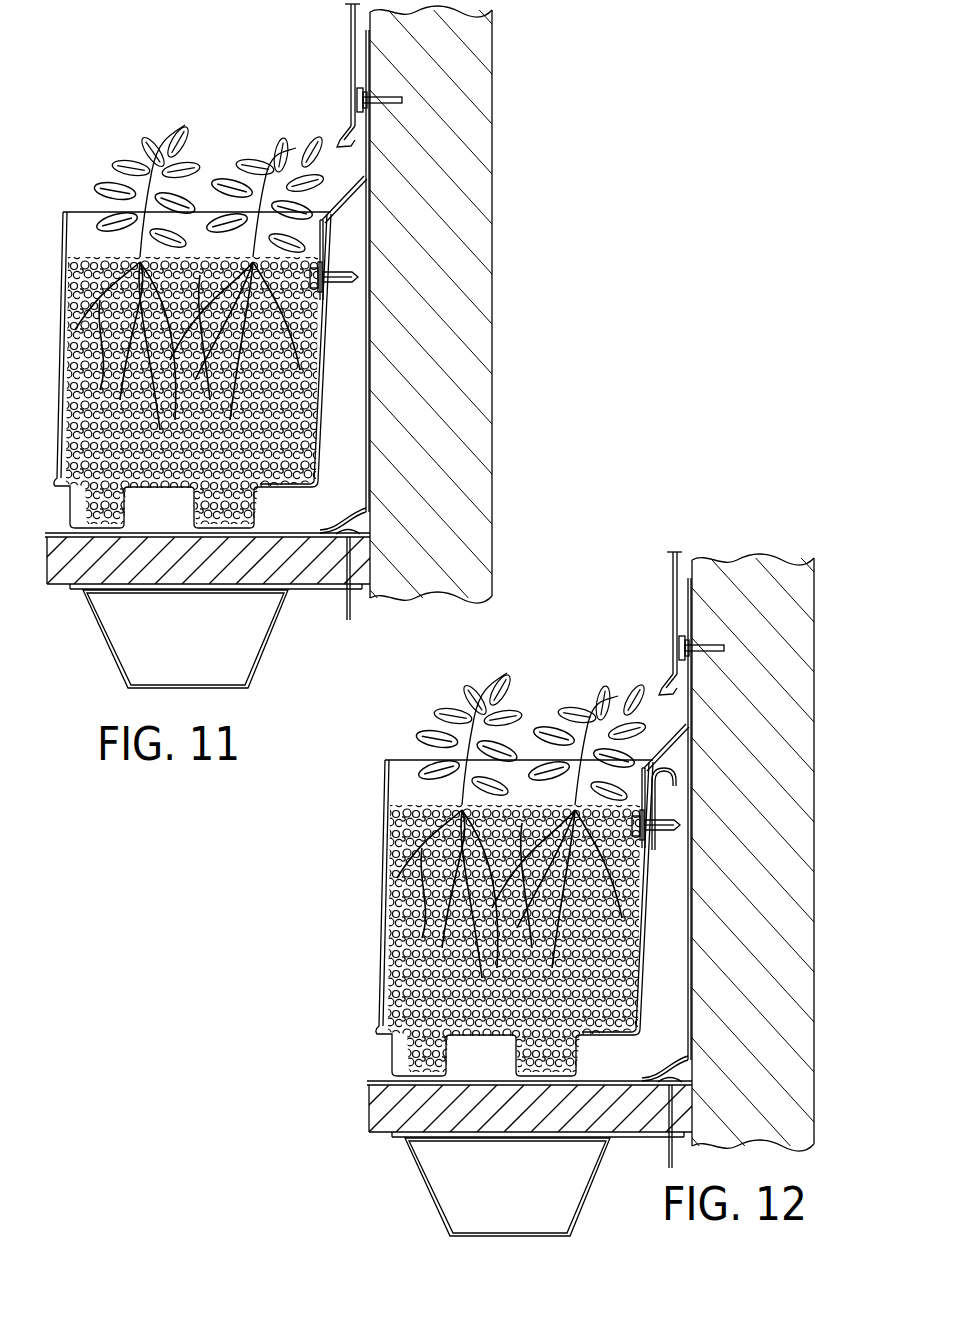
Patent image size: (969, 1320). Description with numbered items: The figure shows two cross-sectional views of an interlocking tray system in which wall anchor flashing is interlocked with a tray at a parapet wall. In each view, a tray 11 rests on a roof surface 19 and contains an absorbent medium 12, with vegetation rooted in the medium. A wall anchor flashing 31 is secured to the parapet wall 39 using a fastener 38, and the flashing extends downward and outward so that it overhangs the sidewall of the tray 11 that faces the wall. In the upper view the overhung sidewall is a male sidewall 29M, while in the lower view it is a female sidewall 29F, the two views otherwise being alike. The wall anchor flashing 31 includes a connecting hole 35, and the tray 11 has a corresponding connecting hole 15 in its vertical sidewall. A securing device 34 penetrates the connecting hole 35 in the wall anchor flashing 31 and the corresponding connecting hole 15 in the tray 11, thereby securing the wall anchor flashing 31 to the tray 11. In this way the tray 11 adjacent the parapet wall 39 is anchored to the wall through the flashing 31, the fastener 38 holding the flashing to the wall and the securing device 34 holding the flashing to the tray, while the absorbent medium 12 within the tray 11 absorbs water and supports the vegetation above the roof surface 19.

In FIG. 11, the tray 11 is at (326, 383).
In FIG. 12, the tray 11 is at (622, 918).
In FIG. 11, the absorbent medium 12 is at (295, 450).
In FIG. 12, the absorbent medium 12 is at (569, 938).
In FIG. 11, the connecting hole 15 is at (333, 271).
In FIG. 12, the connecting hole 15 is at (696, 793).
In FIG. 11, the roof surface 19 is at (197, 568).
In FIG. 12, the roof surface 19 is at (507, 1176).
In FIG. 11, the male sidewall 29M is at (330, 335).
In FIG. 12, the female sidewall 29F is at (763, 848).
In FIG. 11, the wall anchor flashing 31 is at (345, 195).
In FIG. 12, the wall anchor flashing 31 is at (647, 661).
In FIG. 11, the securing device 34 is at (362, 277).
In FIG. 12, the securing device 34 is at (751, 829).
In FIG. 11, the connecting hole 35 is at (312, 277).
In FIG. 12, the connecting hole 35 is at (589, 745).
In FIG. 11, the fastener 38 is at (383, 100).
In FIG. 12, the fastener 38 is at (718, 617).
In FIG. 11, the parapet wall 39 is at (440, 553).
In FIG. 12, the parapet wall 39 is at (793, 830).